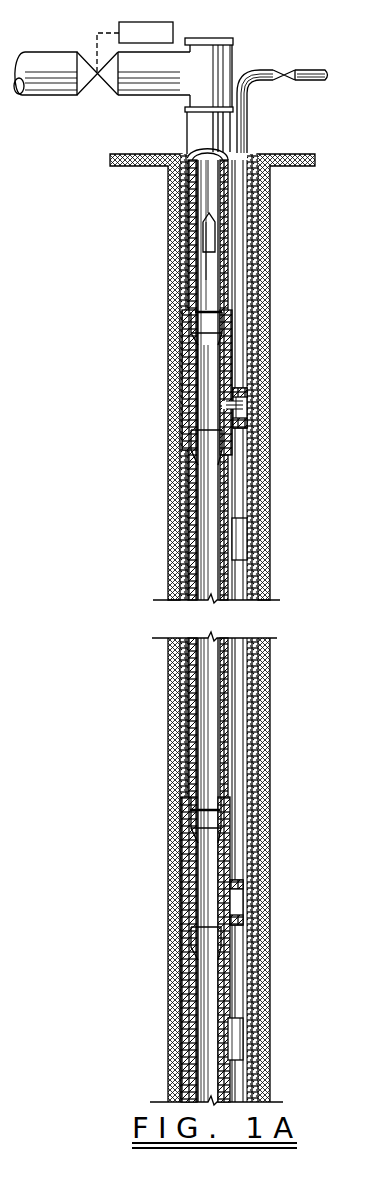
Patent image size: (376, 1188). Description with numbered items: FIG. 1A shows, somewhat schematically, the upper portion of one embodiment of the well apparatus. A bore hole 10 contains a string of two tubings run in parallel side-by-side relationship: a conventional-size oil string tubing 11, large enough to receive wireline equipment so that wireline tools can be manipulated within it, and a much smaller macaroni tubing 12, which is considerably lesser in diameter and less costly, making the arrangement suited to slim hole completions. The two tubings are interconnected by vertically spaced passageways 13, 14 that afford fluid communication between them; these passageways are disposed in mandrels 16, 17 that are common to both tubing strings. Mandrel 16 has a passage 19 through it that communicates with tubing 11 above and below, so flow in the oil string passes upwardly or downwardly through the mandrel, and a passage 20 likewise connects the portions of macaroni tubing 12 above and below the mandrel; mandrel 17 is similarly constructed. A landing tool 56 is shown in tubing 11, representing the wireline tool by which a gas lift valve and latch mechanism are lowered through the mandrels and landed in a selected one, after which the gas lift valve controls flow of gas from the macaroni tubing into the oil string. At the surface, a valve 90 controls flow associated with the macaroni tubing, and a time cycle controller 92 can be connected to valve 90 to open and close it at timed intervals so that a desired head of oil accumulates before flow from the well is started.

The bore hole 10 is at (260, 405).
The tubing 11 is at (172, 558).
The macaroni tubing 12 is at (240, 323).
The passageway 13 is at (240, 393).
The passageway 14 is at (228, 897).
The mandrel 16 is at (197, 325).
The mandrel 17 is at (182, 815).
The passage 19 is at (200, 365).
The passage 20 is at (240, 413).
The landing tool 56 is at (205, 237).
The valve 90 is at (88, 85).
The time cycle controller 92 is at (160, 35).